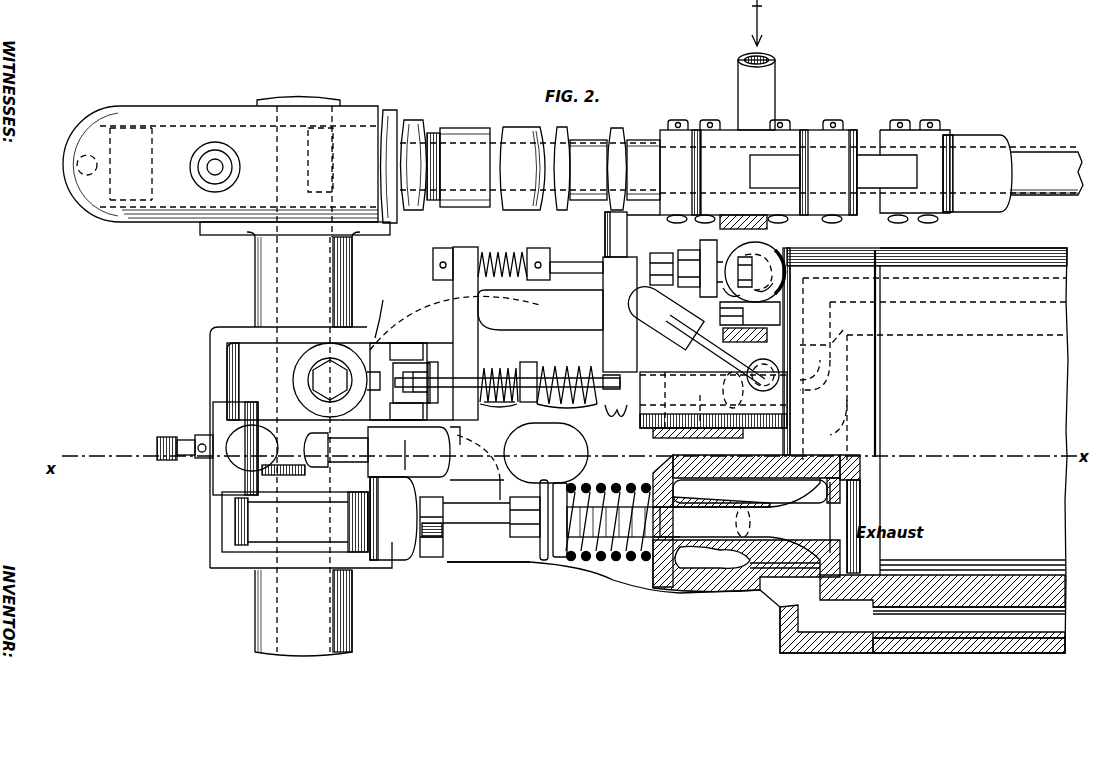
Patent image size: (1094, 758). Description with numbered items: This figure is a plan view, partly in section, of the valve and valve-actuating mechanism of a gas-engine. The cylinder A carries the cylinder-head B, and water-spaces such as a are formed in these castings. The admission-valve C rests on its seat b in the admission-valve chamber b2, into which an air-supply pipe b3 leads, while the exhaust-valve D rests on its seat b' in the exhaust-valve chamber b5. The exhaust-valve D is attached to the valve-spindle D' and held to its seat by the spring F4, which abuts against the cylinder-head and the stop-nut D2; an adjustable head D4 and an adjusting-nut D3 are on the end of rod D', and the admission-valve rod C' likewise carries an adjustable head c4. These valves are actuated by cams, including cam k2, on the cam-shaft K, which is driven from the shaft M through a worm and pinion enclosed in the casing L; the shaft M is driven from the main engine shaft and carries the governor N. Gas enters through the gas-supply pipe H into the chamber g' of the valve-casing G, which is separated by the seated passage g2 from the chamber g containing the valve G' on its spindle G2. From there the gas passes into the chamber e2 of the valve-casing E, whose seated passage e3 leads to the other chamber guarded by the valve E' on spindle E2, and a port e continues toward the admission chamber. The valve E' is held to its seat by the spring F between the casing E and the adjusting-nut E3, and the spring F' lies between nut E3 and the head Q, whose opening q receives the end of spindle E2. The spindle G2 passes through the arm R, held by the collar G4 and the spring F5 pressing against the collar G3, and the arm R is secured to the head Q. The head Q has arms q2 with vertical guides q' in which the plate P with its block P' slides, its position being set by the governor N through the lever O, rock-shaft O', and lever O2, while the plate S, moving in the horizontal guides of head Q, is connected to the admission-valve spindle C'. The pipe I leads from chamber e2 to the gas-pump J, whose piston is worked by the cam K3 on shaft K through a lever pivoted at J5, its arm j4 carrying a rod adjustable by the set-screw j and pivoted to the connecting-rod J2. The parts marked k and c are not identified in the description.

The casing L is at (170, 197).
The shaft M is at (521, 166).
The governor N is at (728, 160).
The gas-supply pipe H is at (768, 95).
The cam-shaft K is at (337, 668).
The lower block k is at (360, 527).
The cam k2 is at (290, 357).
The cam K3 is at (395, 450).
The plate S is at (341, 380).
The plate P is at (410, 347).
The projecting block P' is at (392, 360).
The head Q is at (432, 362).
The opening q is at (507, 366).
The vertical guides q' is at (422, 350).
The projecting arms q2 is at (408, 347).
The adjustable head c4 is at (383, 300).
The arm R is at (465, 333).
The valve-casing G is at (755, 277).
The valve G' is at (744, 272).
The valve-spindle G2 is at (580, 265).
The collar G3 is at (538, 254).
The collar G4 is at (443, 255).
The chamber g is at (731, 289).
The chamber g' is at (768, 279).
The seated passage g2 is at (762, 268).
The spring F is at (567, 415).
The spring F' is at (499, 414).
The spring F4 is at (632, 490).
The spring F5 is at (502, 250).
The lever O is at (608, 292).
The rock-shaft O' is at (697, 235).
The lever O2 is at (603, 383).
The pipe I is at (540, 310).
The valve-casing E is at (543, 492).
The valve E' is at (704, 344).
The valve-spindle E2 is at (603, 417).
The adjusting-nut E3 is at (501, 418).
The port e is at (763, 358).
The chamber e2 is at (734, 390).
The seated passage e3 is at (722, 353).
The passage c is at (706, 410).
The set-screw j is at (231, 448).
The lever arm j4 is at (308, 450).
The gas-pump J is at (540, 483).
The connecting-rod J2 is at (470, 470).
The pivot J5 is at (341, 450).
The exhaust-valve D is at (756, 554).
The valve-spindle D' is at (631, 520).
The stop-nut D2 is at (525, 517).
The adjusting-nut D3 is at (446, 538).
The adjustable head D4 is at (393, 518).
The cylinder A is at (974, 450).
The cylinder-head B is at (925, 351).
The admission-valve C is at (839, 355).
The rod C' is at (815, 397).
The water-space a is at (935, 465).
The valve-seat b is at (841, 329).
The valve-seat b' is at (848, 526).
The admission-valve chamber b2 is at (815, 362).
The air-supply pipe b3 is at (922, 467).
The exhaust-valve chamber b5 is at (695, 490).